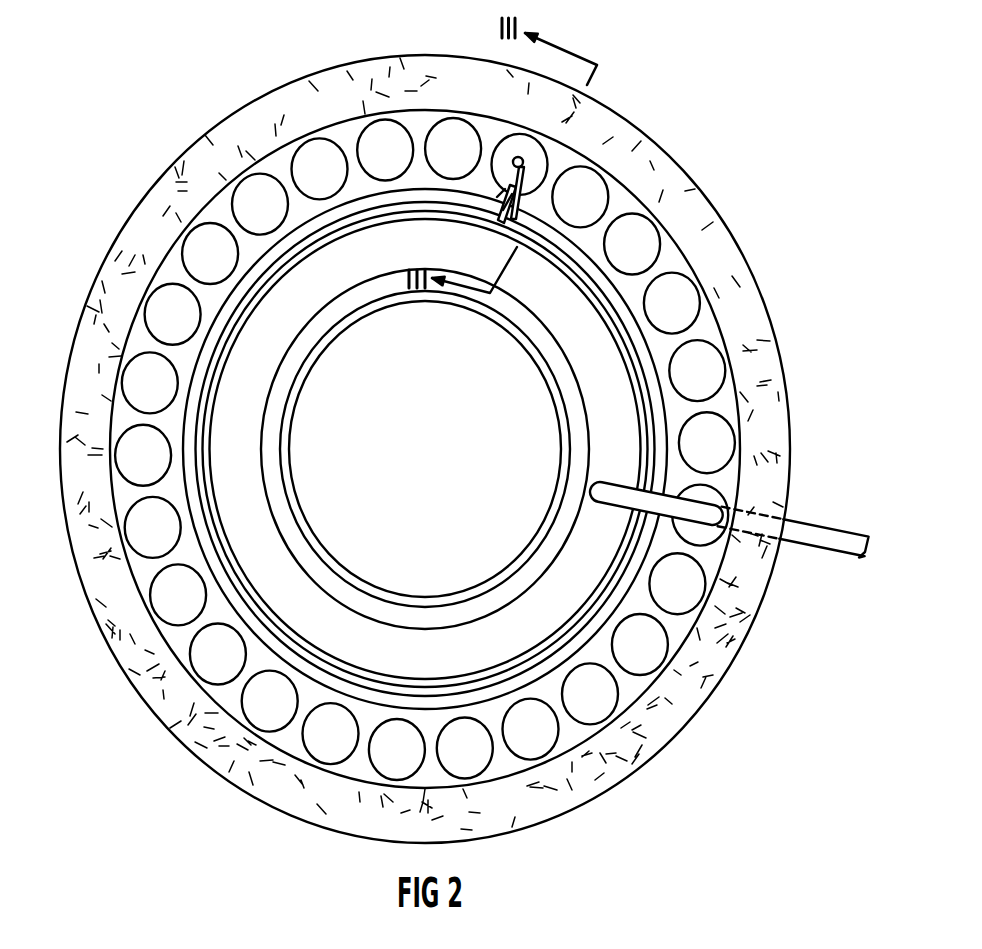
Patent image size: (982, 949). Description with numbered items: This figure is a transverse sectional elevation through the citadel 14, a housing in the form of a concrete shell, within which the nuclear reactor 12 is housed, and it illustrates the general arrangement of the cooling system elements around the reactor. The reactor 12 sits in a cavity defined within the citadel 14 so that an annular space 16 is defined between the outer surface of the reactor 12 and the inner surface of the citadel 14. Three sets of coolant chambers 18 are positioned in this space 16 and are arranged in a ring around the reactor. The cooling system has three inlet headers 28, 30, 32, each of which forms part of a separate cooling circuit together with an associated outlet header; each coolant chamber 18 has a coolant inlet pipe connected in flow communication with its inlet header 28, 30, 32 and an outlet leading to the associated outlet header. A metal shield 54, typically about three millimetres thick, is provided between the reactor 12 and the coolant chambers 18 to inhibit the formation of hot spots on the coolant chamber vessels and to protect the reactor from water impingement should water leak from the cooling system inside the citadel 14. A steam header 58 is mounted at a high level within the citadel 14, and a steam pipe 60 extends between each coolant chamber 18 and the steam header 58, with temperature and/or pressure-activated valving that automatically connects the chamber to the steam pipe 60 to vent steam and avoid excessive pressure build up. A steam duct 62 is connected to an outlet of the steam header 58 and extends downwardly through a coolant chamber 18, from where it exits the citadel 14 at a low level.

The nuclear reactor 12 is at (530, 420).
The citadel 14 is at (760, 357).
The annular space 16 is at (617, 203).
The coolant chambers 18 is at (663, 242).
The inlet header 28 is at (663, 445).
The inlet header 30 is at (425, 449).
The inlet header 32 is at (425, 449).
The metal shield 54 is at (633, 372).
The steam header 58 is at (567, 578).
The steam pipe 60 is at (462, 208).
The steam duct 62 is at (843, 540).